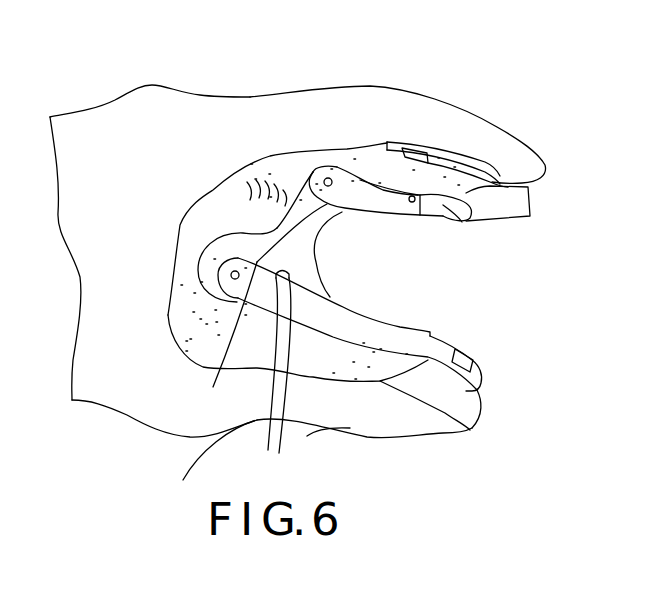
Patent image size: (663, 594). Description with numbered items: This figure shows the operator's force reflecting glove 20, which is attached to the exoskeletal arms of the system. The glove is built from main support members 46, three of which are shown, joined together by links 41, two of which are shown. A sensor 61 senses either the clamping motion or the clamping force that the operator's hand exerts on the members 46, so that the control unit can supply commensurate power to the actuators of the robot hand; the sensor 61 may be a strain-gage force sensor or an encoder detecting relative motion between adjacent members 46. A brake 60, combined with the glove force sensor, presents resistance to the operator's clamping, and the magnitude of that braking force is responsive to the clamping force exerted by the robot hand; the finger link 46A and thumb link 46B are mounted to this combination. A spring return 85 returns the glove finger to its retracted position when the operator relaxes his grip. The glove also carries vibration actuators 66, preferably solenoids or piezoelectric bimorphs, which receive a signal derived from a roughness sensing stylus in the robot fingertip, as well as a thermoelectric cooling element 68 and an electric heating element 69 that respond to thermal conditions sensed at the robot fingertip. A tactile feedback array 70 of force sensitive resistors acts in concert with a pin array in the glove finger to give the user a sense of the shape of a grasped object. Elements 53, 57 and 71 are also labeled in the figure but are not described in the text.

The force reflecting glove 20 is at (545, 88).
The links 41 is at (334, 167).
The main support members 46 is at (343, 196).
The finger link 46A is at (390, 206).
The thumb link 46B is at (310, 298).
The hook 53 is at (443, 348).
The tongue 57 is at (462, 219).
The brake 60 is at (303, 163).
The sensor 61 is at (329, 167).
The vibration actuators 66 is at (498, 209).
The thermoelectric cooling element 68 is at (365, 151).
The electric heating element 69 is at (482, 163).
The tactile feedback array 70 is at (490, 181).
The cover 71 is at (407, 97).
The spring return 85 is at (265, 153).